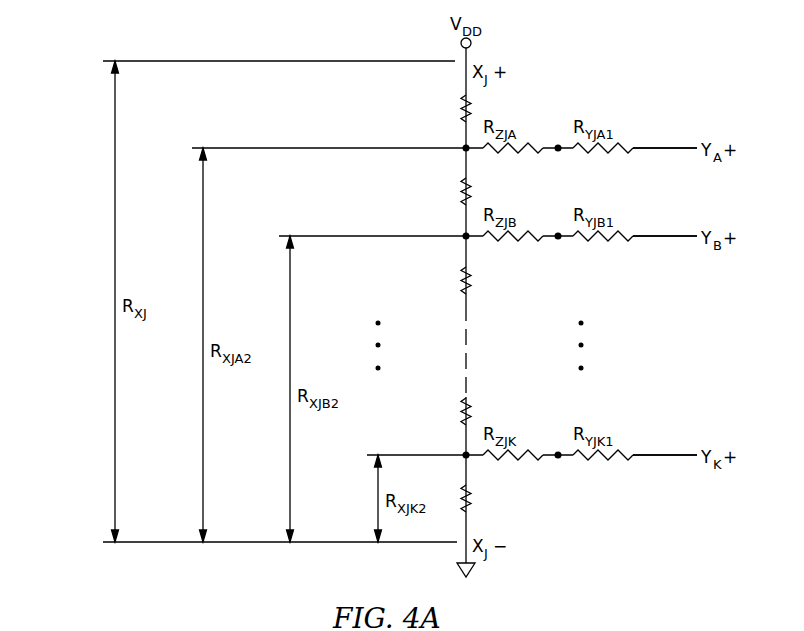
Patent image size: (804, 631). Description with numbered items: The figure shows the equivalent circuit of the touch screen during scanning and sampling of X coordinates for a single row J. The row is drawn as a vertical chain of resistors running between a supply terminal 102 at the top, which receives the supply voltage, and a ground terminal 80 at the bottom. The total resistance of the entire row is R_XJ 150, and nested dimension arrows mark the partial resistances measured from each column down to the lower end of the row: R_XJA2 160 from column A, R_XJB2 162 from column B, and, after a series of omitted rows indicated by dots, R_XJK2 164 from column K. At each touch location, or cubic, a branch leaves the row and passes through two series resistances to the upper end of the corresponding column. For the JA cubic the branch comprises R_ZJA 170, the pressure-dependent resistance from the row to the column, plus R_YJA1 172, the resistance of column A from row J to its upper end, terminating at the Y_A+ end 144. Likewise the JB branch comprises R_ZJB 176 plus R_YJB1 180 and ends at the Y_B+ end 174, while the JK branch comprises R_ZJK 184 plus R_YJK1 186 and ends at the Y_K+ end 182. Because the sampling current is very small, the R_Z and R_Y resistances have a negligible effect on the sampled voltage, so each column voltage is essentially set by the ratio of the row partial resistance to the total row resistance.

The supply voltage terminal VDD 102 is at (461, 42).
The ground terminal 80 is at (472, 568).
The resistance R_XJ 150 is at (115, 345).
The resistance R_XJA2 160 is at (203, 388).
The resistance R_XJB2 162 is at (290, 432).
The resistance R_XJK2 164 is at (378, 497).
The resistance R_ZJA 170 is at (527, 153).
The resistance R_YJA1 172 is at (617, 153).
The Y_A+ end 144 is at (673, 147).
The resistance R_ZJB 176 is at (527, 241).
The resistance R_YJB1 180 is at (617, 241).
The Y_B+ end 174 is at (673, 237).
The resistance R_ZJK 184 is at (527, 460).
The resistance R_YJK1 186 is at (617, 460).
The Y_K+ end 182 is at (673, 456).